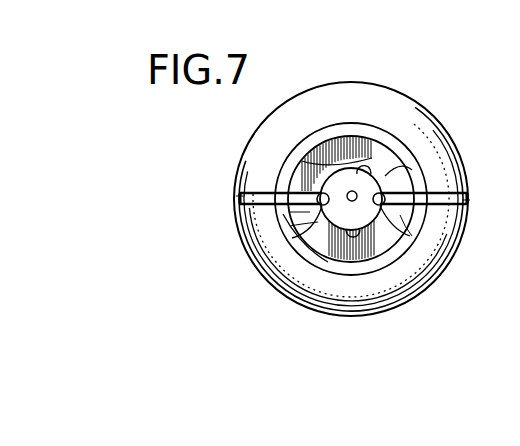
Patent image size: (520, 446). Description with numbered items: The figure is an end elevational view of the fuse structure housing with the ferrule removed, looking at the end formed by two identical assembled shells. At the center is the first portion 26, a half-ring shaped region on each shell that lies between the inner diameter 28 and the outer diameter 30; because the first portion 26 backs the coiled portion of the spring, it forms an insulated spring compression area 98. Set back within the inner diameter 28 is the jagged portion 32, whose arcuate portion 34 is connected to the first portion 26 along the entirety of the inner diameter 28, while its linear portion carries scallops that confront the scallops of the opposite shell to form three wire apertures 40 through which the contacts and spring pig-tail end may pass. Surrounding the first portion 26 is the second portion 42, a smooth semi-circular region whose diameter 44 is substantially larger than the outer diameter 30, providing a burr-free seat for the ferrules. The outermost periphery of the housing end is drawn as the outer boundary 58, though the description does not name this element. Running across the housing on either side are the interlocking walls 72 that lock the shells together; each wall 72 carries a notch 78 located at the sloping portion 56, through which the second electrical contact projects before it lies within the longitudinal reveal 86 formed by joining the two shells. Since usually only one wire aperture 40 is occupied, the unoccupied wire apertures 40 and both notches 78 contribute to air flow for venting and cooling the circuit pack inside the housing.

The first portion 26 is at (438, 224).
The inner diameter 28 is at (353, 232).
The outer diameter 30 is at (300, 222).
The jagged portion 32 is at (332, 128).
The arcuate portion 34 is at (373, 171).
The wire apertures 40 is at (318, 230).
The second portion 42 is at (445, 147).
The diameter 44 is at (293, 148).
The sloping portion 56 is at (430, 126).
The outer wall 58 is at (437, 103).
The interlocking wall 72 is at (247, 191).
The notch 78 is at (278, 191).
The longitudinal reveal 86 is at (240, 198).
The insulated spring compression area 98 is at (305, 212).